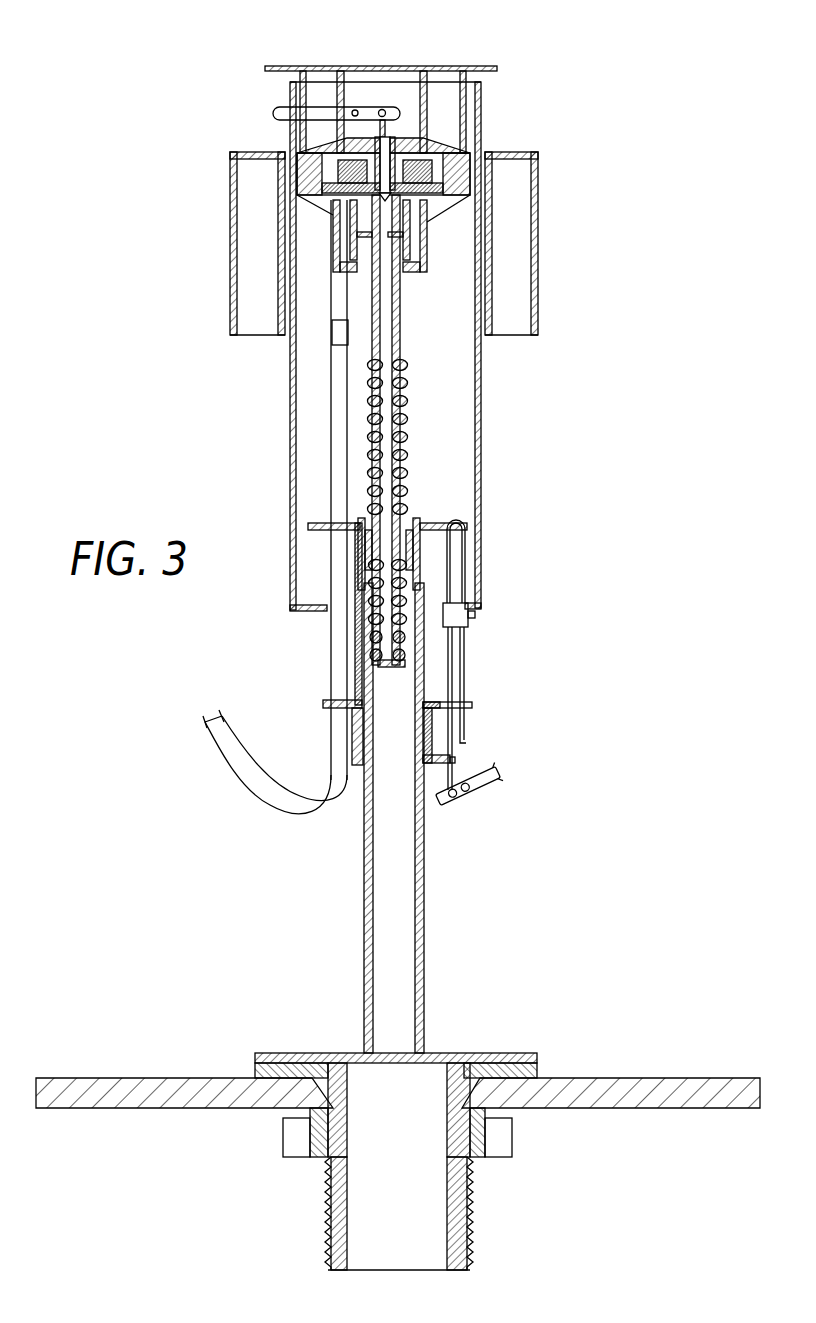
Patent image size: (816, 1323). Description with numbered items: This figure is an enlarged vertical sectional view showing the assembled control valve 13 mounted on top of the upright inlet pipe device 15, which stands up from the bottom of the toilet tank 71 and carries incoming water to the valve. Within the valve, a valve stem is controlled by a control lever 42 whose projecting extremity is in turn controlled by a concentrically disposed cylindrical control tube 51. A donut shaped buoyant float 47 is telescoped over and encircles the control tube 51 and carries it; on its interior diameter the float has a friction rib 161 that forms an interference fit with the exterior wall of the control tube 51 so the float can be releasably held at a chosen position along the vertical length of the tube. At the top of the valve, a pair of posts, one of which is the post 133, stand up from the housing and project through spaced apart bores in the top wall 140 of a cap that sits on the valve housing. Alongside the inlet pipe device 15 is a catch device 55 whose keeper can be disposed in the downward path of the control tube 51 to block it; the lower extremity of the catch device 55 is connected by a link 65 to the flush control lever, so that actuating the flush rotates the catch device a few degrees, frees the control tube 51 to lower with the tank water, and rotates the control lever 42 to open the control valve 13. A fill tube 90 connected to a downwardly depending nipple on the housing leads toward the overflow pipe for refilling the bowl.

The control valve 13 is at (443, 224).
The inlet pipe device 15 is at (433, 890).
The control lever 42 is at (318, 107).
The float 47 is at (547, 234).
The control tube 51 is at (495, 399).
The catch device 55 is at (480, 660).
The link 65 is at (478, 797).
The toilet tank 71 is at (592, 1125).
The fill tube 90 is at (337, 762).
The post 133 is at (427, 97).
The top wall 140 is at (361, 66).
The rib 161 is at (290, 337).